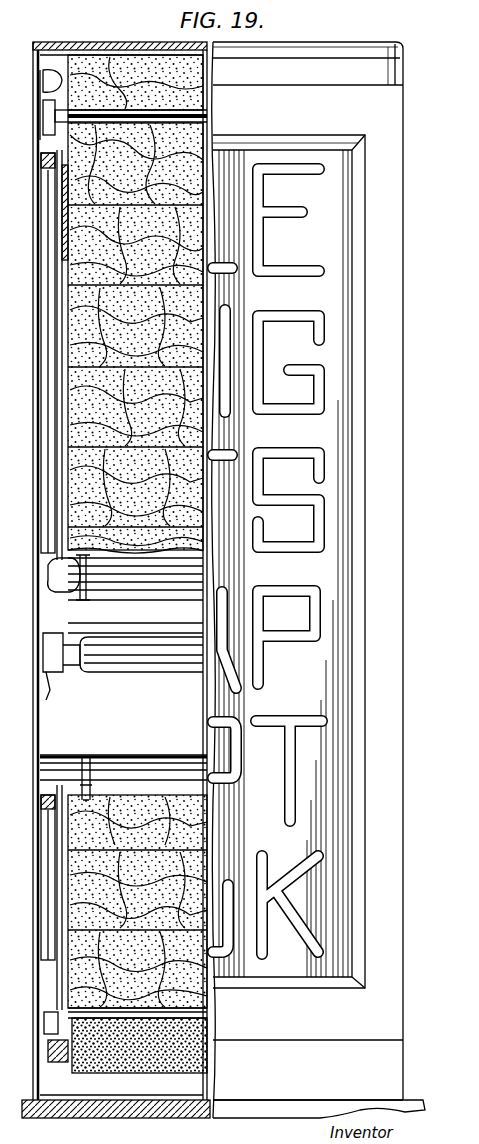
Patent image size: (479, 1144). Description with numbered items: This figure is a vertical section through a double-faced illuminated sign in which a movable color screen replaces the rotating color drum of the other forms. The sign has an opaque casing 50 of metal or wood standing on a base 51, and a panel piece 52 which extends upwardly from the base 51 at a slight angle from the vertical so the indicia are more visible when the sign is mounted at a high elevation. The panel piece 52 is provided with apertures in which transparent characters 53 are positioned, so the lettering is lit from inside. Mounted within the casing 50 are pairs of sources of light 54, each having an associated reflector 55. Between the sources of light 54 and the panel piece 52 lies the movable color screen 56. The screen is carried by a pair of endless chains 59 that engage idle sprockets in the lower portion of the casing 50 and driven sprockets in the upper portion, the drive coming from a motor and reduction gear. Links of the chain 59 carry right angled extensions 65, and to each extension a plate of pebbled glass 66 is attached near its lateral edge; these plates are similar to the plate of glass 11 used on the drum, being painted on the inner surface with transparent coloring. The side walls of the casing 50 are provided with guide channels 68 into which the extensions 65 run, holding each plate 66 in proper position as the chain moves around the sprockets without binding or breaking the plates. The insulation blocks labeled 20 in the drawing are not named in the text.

The plate of glass 11 is at (112, 1075).
The insulation panel 20 is at (94, 494).
The casing 50 is at (344, 52).
The base 51 is at (24, 1104).
The panel piece 52 is at (298, 966).
The transparent characters 53 is at (303, 272).
The source of light 54 is at (165, 662).
The reflector 55 is at (70, 713).
The movable color screen 56 is at (58, 409).
The endless chain 59 is at (50, 600).
The right angled extension 65 is at (78, 238).
The plate of pebbled glass 66 is at (120, 42).
The guide channel 68 is at (48, 342).